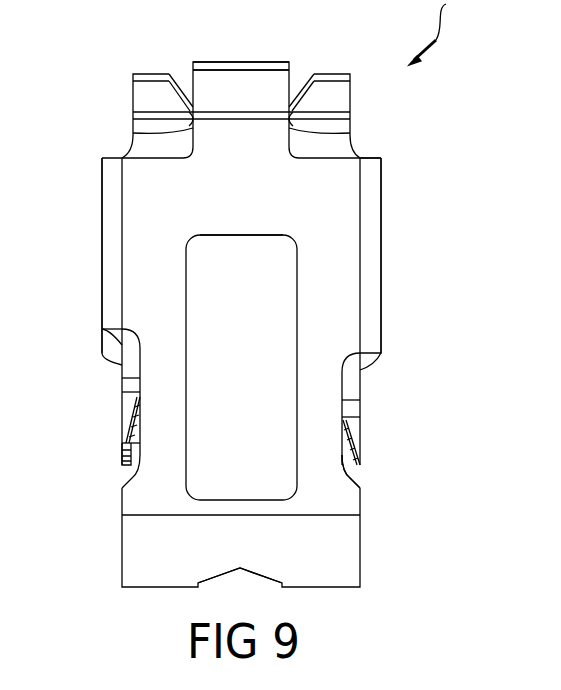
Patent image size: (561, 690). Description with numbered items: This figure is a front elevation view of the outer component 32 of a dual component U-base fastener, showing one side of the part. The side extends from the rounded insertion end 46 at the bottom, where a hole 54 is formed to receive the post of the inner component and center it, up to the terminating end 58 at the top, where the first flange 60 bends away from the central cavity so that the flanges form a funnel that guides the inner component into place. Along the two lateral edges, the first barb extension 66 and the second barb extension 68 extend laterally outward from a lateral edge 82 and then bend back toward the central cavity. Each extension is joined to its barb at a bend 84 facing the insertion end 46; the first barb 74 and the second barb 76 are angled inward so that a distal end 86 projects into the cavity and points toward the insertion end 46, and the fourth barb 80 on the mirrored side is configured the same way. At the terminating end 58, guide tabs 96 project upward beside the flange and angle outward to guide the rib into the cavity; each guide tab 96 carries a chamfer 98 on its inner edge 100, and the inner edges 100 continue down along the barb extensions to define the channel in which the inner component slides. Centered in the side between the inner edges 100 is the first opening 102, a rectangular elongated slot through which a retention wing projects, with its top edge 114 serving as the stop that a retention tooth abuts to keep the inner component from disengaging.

The outer component 32 is at (444, 32).
The insertion end 46 is at (322, 573).
The hole 54 is at (270, 580).
The terminating end 58 is at (222, 62).
The first flange 60 is at (240, 90).
The first barb extension 66 is at (370, 272).
The second barb extension 68 is at (108, 238).
The first barb 74 is at (353, 435).
The second barb 76 is at (128, 417).
The fourth barb 80 is at (123, 452).
The lateral edge 82 is at (126, 445).
The bend 84 is at (368, 157).
The distal end 86 is at (355, 470).
The guide tab 96 is at (145, 93).
The chamfer 98 is at (181, 90).
The inner edge 100 is at (133, 133).
The first opening 102 is at (186, 296).
The top edge 114 is at (240, 235).